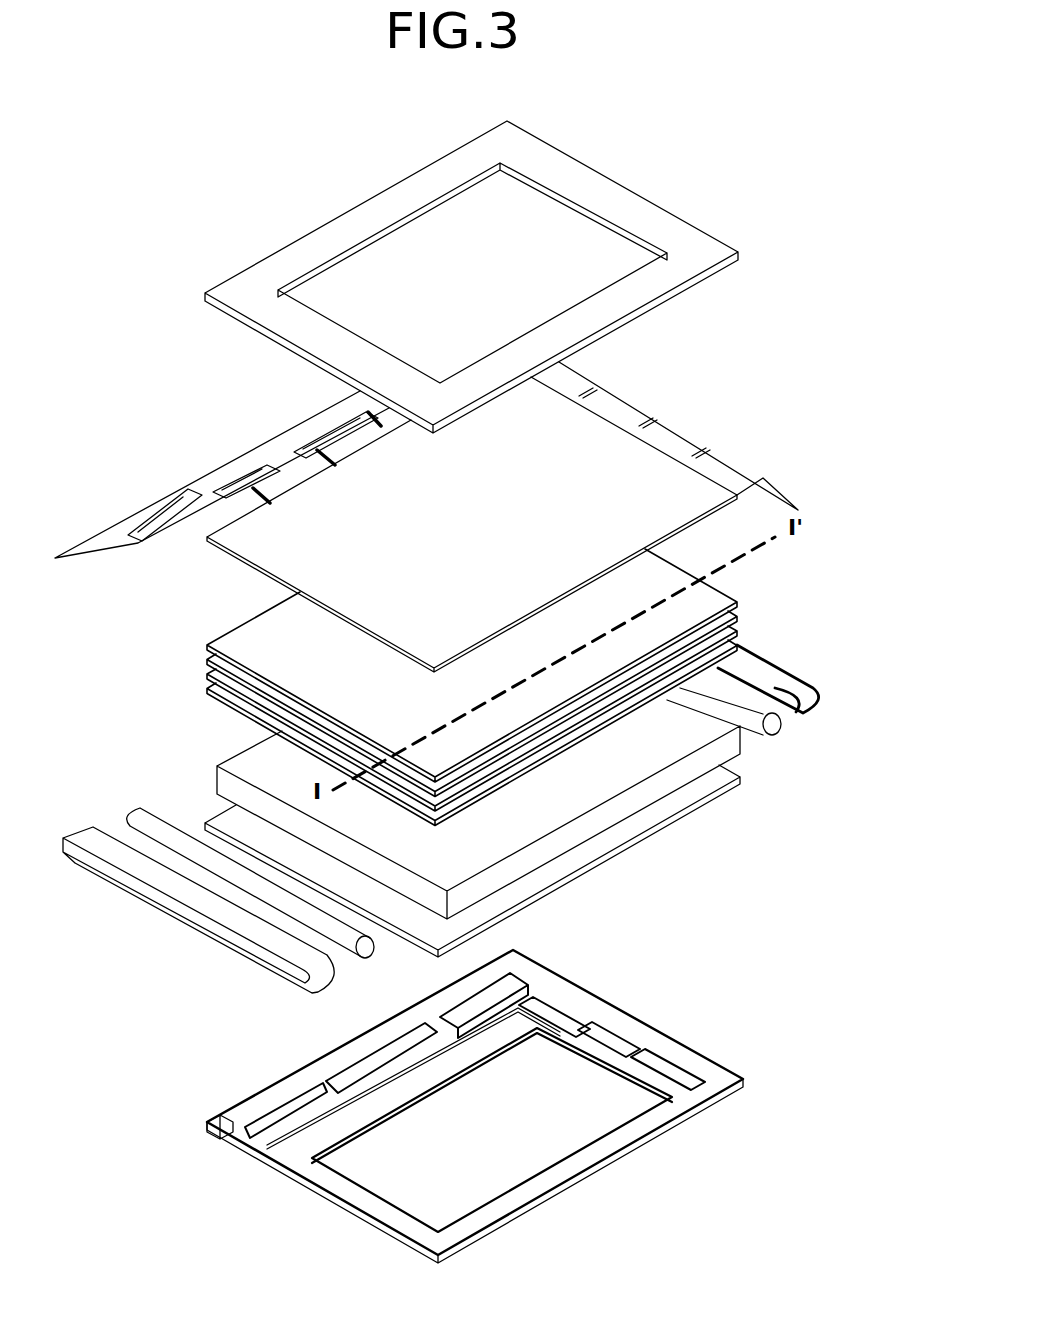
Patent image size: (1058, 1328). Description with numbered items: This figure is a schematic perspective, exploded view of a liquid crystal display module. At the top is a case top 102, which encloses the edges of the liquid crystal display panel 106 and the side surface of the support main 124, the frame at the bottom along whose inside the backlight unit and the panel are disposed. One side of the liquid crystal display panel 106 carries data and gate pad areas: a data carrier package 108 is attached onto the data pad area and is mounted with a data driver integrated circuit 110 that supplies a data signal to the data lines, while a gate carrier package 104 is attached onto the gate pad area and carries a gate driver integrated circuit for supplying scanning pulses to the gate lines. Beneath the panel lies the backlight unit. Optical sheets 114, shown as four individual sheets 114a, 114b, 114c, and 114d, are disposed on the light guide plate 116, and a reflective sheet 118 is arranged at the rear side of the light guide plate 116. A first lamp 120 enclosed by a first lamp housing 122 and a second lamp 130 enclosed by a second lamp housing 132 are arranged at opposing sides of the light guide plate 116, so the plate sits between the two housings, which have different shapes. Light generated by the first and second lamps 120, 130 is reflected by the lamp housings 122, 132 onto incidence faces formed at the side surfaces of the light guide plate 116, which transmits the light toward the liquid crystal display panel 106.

The case top 102 is at (706, 241).
The gate carrier package 104 is at (770, 488).
The liquid crystal display panel 106 is at (597, 415).
The data carrier package 108 is at (333, 450).
The data driver integrated circuit 110 is at (247, 473).
The optical sheets 114 is at (561, 687).
The optical sheet 114a is at (742, 602).
The optical sheet 114b is at (742, 617).
The optical sheet 114c is at (742, 631).
The optical sheet 114d is at (742, 647).
The light guide plate 116 is at (600, 815).
The reflective sheet 118 is at (748, 785).
The first lamp 120 is at (138, 815).
The first lamp housing 122 is at (82, 832).
The support main 124 is at (710, 1068).
The second lamp 130 is at (785, 724).
The second lamp housing 132 is at (816, 702).